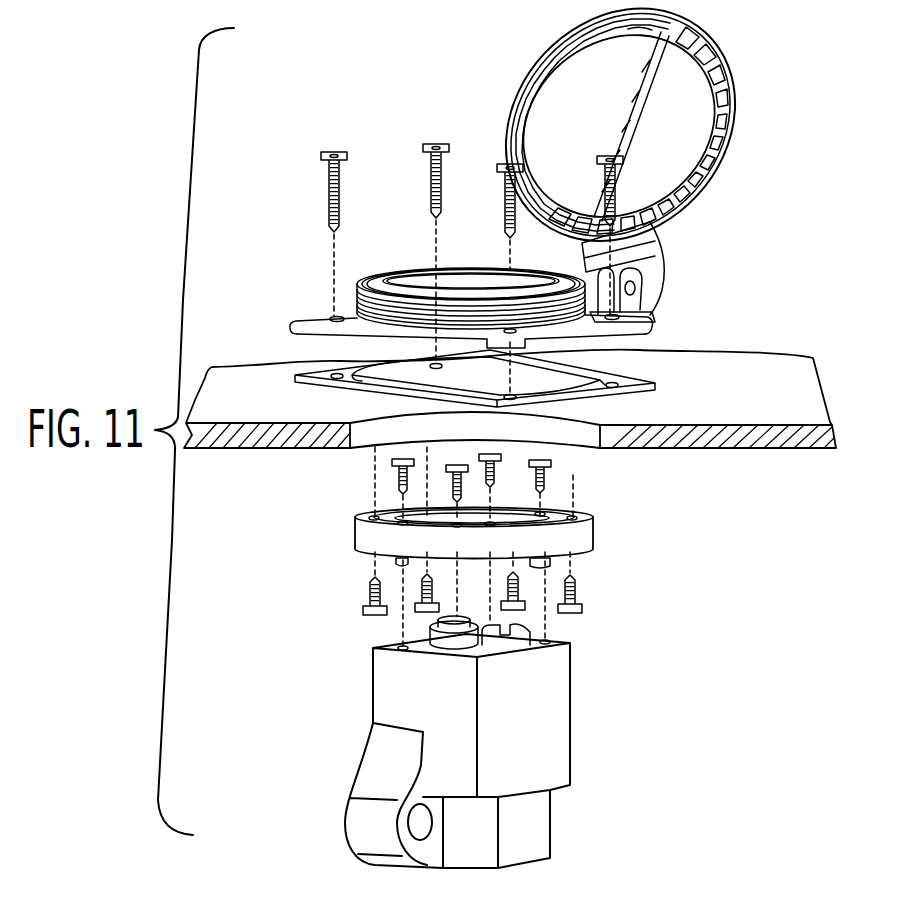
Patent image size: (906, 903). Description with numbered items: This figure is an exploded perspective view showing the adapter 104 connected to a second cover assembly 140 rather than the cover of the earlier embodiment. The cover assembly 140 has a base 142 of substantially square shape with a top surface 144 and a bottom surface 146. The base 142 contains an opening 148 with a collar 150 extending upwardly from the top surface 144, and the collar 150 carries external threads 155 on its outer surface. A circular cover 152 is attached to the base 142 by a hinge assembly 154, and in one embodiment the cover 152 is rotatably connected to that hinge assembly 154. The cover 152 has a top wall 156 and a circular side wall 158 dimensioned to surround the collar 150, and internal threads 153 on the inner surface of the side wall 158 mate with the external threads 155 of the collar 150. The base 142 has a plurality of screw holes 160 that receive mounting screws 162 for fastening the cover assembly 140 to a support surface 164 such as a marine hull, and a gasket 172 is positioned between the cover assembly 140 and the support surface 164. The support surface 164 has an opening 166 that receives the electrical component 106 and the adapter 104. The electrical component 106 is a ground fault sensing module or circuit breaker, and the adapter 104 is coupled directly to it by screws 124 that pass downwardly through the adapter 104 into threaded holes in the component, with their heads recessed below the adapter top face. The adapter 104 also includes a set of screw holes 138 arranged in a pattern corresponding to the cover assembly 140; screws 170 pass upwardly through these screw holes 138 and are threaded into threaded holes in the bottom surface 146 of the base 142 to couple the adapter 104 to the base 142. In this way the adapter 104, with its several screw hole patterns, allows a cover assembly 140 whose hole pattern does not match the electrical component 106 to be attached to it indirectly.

The adapter ring 104 is at (596, 527).
The electrical component 106 is at (577, 718).
The screws 124 is at (391, 466).
The screw holes 138 is at (373, 518).
The cover assembly 140 is at (523, 69).
The base 142 is at (650, 318).
The top surface 144 is at (300, 321).
The bottom surface 146 is at (316, 335).
The opening 148 is at (468, 274).
The collar 150 is at (357, 280).
The cover 152 is at (740, 115).
The internal threads 153 is at (665, 32).
The hinge assembly 154 is at (660, 251).
The external threads 155 is at (356, 300).
The top wall 156 is at (677, 92).
The side wall 158 is at (718, 153).
The screw holes 160 is at (335, 314).
The mounting screws 162 is at (427, 142).
The support surface 164 is at (840, 440).
The opening 166 is at (560, 436).
The screws 170 is at (363, 612).
The gasket 172 is at (652, 382).